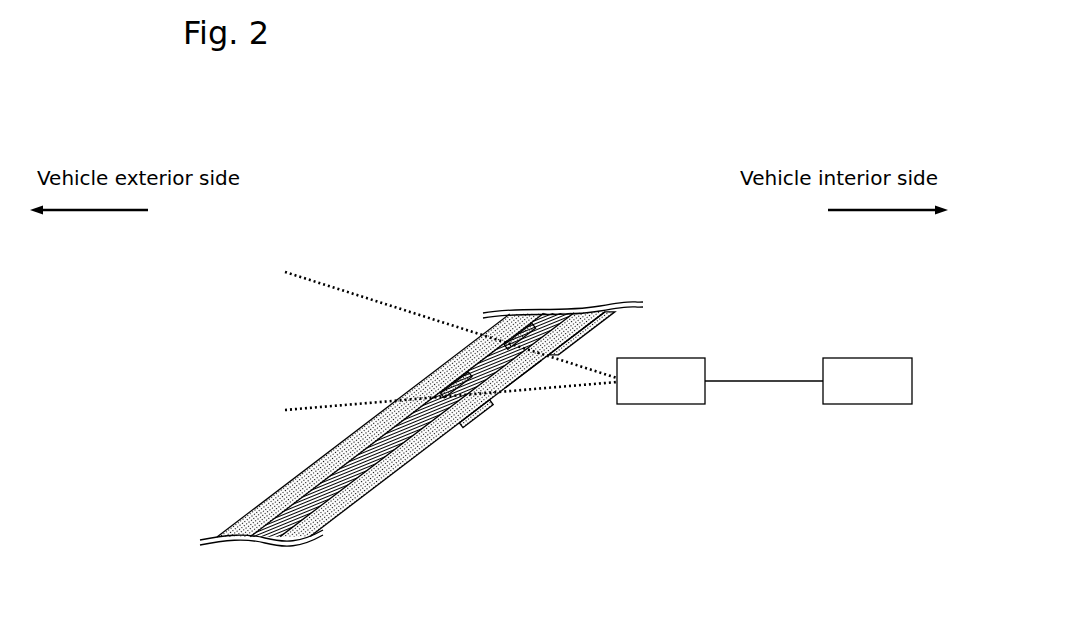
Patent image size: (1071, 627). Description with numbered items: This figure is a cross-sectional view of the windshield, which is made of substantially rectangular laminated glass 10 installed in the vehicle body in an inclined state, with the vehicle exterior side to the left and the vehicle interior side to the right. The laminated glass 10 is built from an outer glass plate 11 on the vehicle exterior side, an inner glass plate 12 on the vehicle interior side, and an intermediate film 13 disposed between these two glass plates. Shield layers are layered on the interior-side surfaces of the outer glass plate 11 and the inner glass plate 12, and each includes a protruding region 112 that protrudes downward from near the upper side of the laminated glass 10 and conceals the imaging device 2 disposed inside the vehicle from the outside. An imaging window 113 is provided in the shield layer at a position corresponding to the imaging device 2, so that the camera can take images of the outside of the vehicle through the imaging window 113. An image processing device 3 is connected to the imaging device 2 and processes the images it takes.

The laminated glass 10 is at (230, 494).
The outer glass plate 11 is at (338, 453).
The inner glass plate 12 is at (352, 489).
The intermediate film 13 is at (368, 448).
The protruding region 112 is at (453, 388).
The imaging window 113 is at (529, 381).
The imaging device 2 is at (686, 364).
The image processing device 3 is at (863, 364).